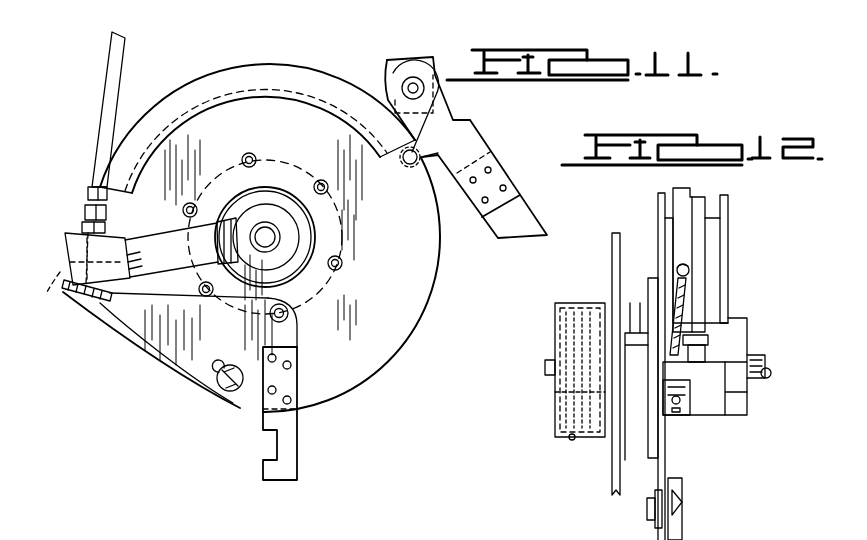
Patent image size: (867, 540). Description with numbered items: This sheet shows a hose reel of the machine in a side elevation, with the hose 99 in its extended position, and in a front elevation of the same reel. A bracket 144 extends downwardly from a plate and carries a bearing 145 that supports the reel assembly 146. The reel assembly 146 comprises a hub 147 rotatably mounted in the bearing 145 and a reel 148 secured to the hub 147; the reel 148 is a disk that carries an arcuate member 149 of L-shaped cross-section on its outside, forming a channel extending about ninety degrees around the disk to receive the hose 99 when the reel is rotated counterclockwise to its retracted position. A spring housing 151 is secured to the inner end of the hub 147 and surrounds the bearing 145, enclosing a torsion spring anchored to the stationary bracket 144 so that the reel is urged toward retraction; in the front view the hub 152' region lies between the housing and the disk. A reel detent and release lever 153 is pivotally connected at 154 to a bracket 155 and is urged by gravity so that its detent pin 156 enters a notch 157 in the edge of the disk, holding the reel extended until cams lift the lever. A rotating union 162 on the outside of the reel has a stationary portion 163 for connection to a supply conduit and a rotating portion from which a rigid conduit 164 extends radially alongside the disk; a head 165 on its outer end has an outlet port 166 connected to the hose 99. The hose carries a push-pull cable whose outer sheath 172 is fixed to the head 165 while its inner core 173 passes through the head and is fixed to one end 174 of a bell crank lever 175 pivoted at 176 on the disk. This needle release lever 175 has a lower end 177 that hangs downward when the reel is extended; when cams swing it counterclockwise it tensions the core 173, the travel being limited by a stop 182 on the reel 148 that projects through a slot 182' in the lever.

In FIG. 11, the hose 99 is at (128, 68).
In FIG. 12, the hose 99 is at (712, 229).
In FIG. 12, the bracket 144 is at (611, 478).
In FIG. 12, the bearing 145 is at (555, 398).
In FIG. 11, the reel assembly 146 is at (396, 365).
In FIG. 12, the hub 147 is at (655, 410).
In FIG. 11, the reel 148 is at (415, 301).
In FIG. 12, the reel 148 is at (657, 195).
In FIG. 12, the arcuate member 149 is at (729, 240).
In FIG. 12, the spring housing 151 is at (585, 303).
In FIG. 12, the hub 152' is at (589, 386).
In FIG. 11, the reel detent and release lever 153 is at (463, 140).
In FIG. 11, the pivot 154 is at (417, 85).
In FIG. 11, the bracket 155 is at (388, 60).
In FIG. 11, the detent pin 156 is at (444, 122).
In FIG. 11, the notch 157 is at (407, 165).
In FIG. 12, the rotating union 162 is at (744, 320).
In FIG. 12, the stationary portion 163 is at (766, 378).
In FIG. 11, the rigid conduit 164 is at (155, 248).
In FIG. 11, the head 165 is at (68, 250).
In FIG. 12, the head 165 is at (720, 412).
In FIG. 11, the outlet port 166 is at (84, 226).
In FIG. 12, the outer sheath 172 is at (683, 300).
In FIG. 11, the inner core 173 is at (74, 292).
In FIG. 12, the inner core 173 is at (690, 402).
In FIG. 11, the end of bell crank lever 174 is at (100, 298).
In FIG. 11, the bell crank lever 175 is at (180, 350).
In FIG. 11, the pivot 176 is at (300, 312).
In FIG. 11, the lower end 177 is at (300, 456).
In FIG. 11, the stop 182 is at (209, 411).
In FIG. 11, the slot 182' is at (172, 402).